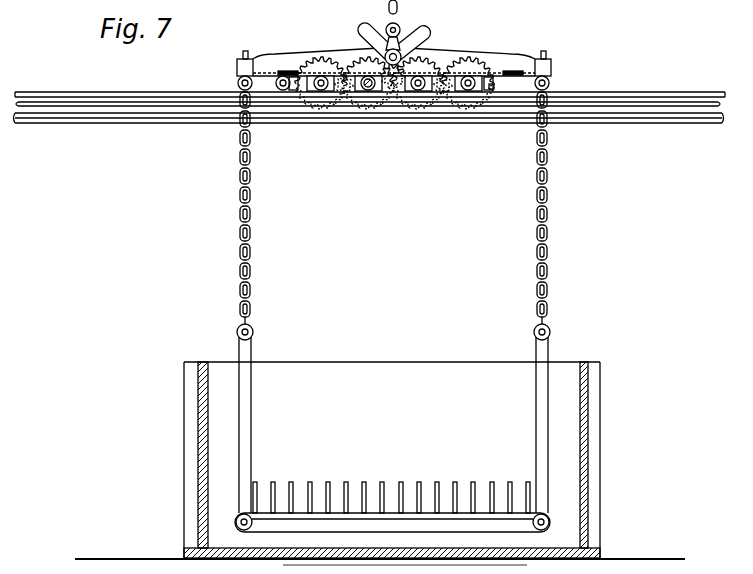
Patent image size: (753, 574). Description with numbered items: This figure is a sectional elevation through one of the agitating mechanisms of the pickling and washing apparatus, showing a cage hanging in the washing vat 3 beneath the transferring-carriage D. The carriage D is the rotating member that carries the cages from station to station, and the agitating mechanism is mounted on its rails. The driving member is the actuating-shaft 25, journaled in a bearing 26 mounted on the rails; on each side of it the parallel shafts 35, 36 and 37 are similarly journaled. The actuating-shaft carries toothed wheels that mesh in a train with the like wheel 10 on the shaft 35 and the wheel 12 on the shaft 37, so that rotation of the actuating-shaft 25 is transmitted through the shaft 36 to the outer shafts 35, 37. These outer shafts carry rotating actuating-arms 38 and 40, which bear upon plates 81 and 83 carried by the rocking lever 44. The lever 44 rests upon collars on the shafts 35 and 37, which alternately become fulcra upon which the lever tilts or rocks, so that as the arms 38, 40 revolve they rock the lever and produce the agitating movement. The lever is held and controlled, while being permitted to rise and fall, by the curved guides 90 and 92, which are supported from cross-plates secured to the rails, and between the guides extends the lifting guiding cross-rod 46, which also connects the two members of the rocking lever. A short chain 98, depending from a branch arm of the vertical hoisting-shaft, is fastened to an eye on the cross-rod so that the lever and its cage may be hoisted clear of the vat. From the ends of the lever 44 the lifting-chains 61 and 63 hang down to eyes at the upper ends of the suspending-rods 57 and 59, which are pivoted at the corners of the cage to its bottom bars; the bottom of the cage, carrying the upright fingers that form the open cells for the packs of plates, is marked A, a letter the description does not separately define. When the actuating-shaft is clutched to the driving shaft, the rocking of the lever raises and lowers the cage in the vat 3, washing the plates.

The washing bath or vat 3 is at (380, 463).
The toothed wheel 10 is at (320, 64).
The toothed wheel 12 is at (484, 63).
The actuating-shaft 25 is at (368, 92).
The bearing 26 is at (494, 87).
The parallel shaft 35 is at (320, 92).
The parallel shaft 36 is at (418, 92).
The parallel shaft 37 is at (468, 92).
The rotating actuating-arm 38 is at (278, 84).
The rotating actuating-arm 40 is at (441, 78).
The rocking lever 44 is at (311, 54).
The lifting guiding cross-rod 46 is at (397, 51).
The suspending-rod 57 is at (252, 407).
The suspending-rod 59 is at (538, 417).
The lifting-chain 61 is at (249, 244).
The lifting-chain 63 is at (546, 262).
The plate 81 is at (296, 71).
The plate 83 is at (513, 75).
The curved guide 90 is at (374, 27).
The curved guide 92 is at (420, 34).
The short chain 98 is at (389, 16).
The basket bar A is at (392, 507).
The transferring-carriage D is at (617, 100).